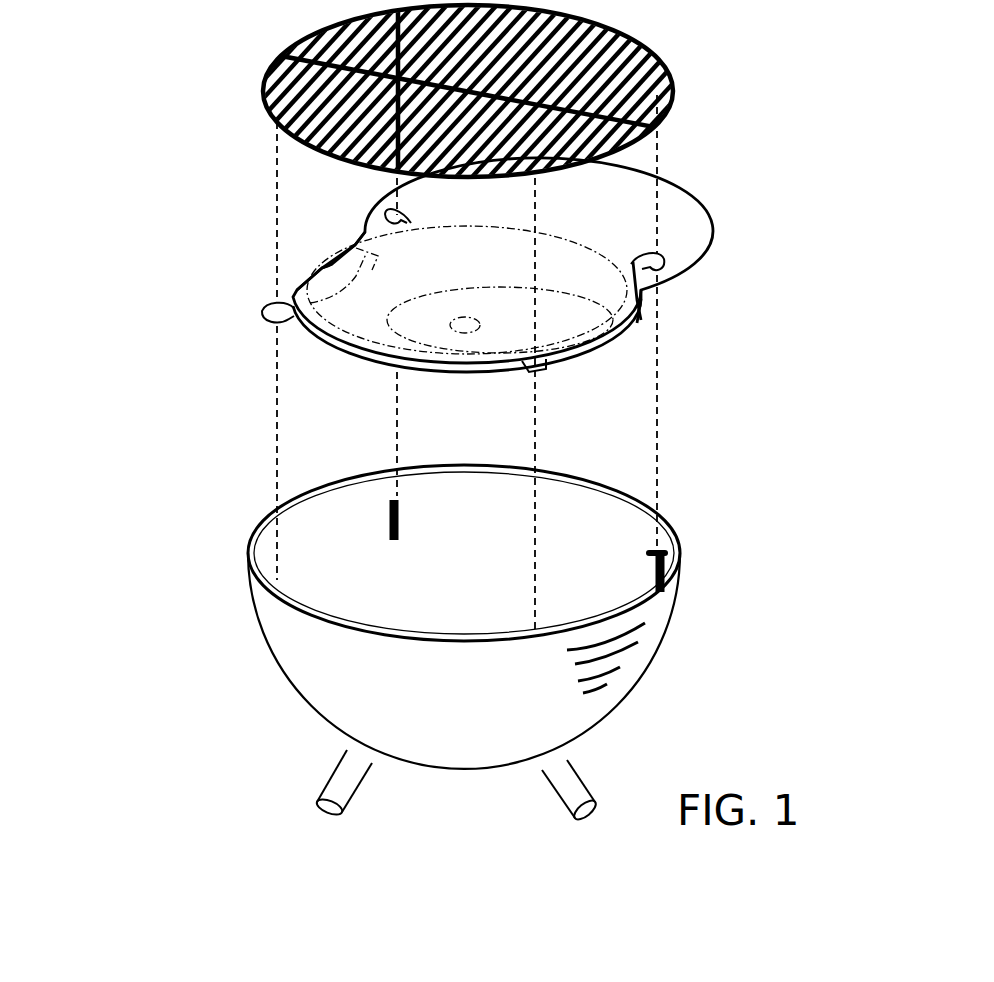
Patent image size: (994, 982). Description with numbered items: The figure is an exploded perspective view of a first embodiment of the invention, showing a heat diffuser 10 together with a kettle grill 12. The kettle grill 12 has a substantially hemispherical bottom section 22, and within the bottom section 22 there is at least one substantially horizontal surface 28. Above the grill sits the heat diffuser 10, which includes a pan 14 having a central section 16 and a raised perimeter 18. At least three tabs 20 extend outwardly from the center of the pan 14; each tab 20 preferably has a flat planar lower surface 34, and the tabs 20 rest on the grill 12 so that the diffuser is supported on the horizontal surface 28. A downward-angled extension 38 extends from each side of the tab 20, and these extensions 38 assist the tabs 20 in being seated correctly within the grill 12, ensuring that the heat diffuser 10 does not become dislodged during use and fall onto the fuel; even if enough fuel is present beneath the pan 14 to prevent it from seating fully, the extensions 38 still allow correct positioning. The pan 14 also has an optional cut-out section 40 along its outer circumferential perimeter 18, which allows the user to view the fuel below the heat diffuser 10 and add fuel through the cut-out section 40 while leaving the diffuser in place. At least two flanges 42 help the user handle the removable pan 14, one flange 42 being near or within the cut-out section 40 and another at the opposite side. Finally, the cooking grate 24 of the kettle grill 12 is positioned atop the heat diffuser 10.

The heat diffuser 10 is at (240, 345).
The kettle grill 12 is at (277, 632).
The pan 14 is at (322, 282).
The central section 16 is at (500, 320).
The raised perimeter 18 is at (652, 280).
The tabs 20 is at (273, 313).
The bottom section 22 is at (315, 673).
The cooking grate 24 is at (673, 77).
The horizontal surface 28 is at (661, 553).
The flat planar lower surface 34 is at (537, 372).
The downward-angled extension 38 is at (277, 318).
The cut-out section 40 is at (352, 243).
The flange 42 is at (330, 264).